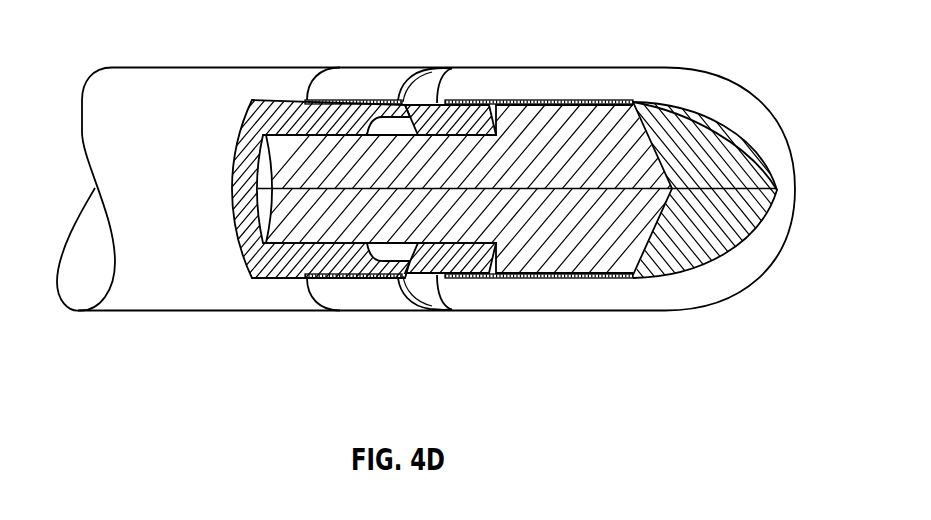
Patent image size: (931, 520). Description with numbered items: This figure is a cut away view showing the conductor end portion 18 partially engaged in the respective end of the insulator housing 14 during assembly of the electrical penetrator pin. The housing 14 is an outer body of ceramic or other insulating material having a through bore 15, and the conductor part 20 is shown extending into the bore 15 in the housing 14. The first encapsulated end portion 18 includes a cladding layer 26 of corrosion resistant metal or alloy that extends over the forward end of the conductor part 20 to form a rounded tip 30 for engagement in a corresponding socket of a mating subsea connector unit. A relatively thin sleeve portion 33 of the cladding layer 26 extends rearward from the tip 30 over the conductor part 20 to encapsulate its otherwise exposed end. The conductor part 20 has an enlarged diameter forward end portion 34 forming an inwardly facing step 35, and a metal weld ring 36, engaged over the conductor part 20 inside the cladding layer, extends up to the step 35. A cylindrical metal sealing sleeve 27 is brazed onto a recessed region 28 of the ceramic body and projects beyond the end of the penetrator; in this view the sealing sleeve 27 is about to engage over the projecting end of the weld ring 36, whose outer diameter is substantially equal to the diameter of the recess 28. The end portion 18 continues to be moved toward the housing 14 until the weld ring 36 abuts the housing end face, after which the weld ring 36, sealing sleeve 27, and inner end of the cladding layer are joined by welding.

The housing 14 is at (137, 312).
The through bore 15 is at (262, 184).
The first encapsulated end portion 18 is at (667, 64).
The conductor part 20 is at (385, 218).
The cladding layer 26 is at (757, 175).
The sealing sleeve 27 is at (380, 302).
The recessed region 28 is at (333, 274).
The rounded tip 30 is at (762, 112).
The sleeve portion 33 is at (542, 276).
The enlarged diameter forward end portion 34 is at (593, 262).
The step 35 is at (486, 273).
The weld ring 36 is at (452, 70).